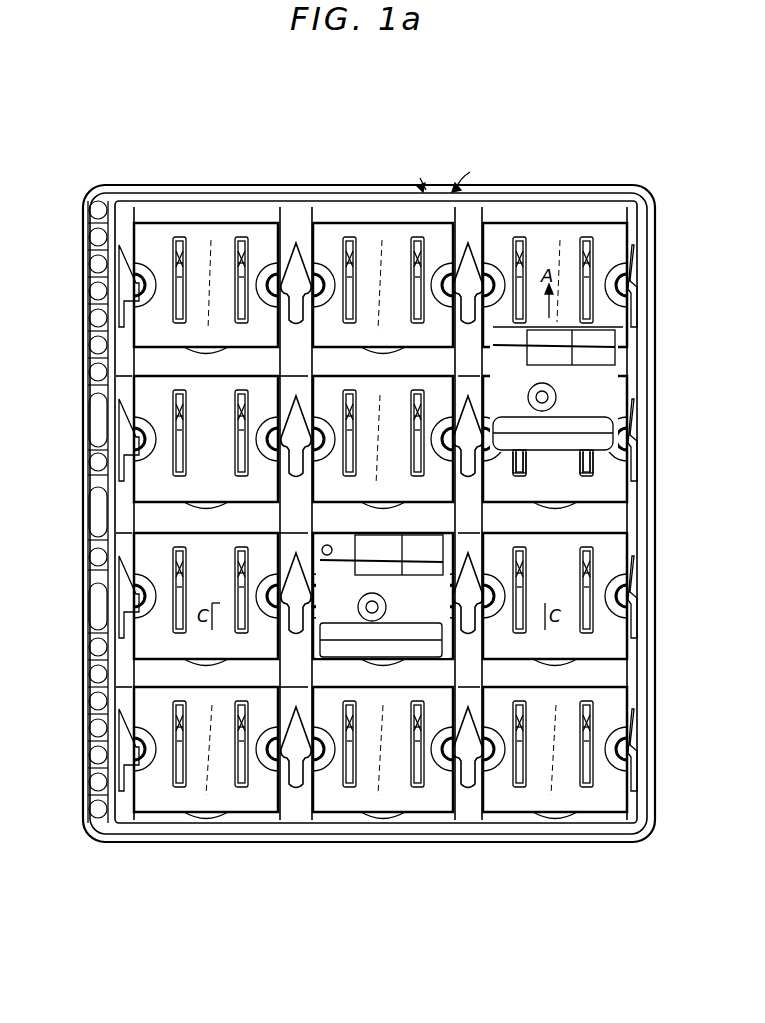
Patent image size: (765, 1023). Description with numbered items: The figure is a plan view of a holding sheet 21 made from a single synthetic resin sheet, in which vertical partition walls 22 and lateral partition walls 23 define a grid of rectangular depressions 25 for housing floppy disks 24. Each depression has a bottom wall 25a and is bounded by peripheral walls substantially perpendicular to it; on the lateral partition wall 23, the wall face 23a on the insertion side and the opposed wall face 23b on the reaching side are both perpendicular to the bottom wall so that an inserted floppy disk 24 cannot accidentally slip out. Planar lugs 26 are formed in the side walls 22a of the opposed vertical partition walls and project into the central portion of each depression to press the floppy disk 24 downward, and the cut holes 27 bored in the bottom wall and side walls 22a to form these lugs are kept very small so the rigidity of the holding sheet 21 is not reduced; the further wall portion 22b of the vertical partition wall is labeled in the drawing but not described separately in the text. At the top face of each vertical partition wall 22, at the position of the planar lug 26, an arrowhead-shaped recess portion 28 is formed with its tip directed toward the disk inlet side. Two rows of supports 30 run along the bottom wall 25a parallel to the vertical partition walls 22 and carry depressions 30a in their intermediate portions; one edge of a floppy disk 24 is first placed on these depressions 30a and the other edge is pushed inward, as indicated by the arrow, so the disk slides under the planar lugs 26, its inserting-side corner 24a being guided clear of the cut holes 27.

The holding sheet 21 is at (556, 181).
The vertical partition wall 22 is at (160, 365).
The side wall 22a is at (128, 232).
The side wall 22b is at (95, 192).
The lateral partition wall 23 is at (220, 210).
The wall face on the insertion side 23a is at (165, 228).
The wall face on the reaching side 23b is at (185, 395).
The floppy disk 24 is at (603, 383).
The corner on the inserting side 24a is at (500, 448).
The rectangular depression 25 is at (205, 236).
The bottom wall of the depression 25a is at (200, 298).
The planar lug 26 is at (142, 285).
The cut hole 27 is at (312, 290).
The recess portion 28 is at (648, 218).
The support 30 is at (421, 180).
The depression of the support 30a is at (470, 172).